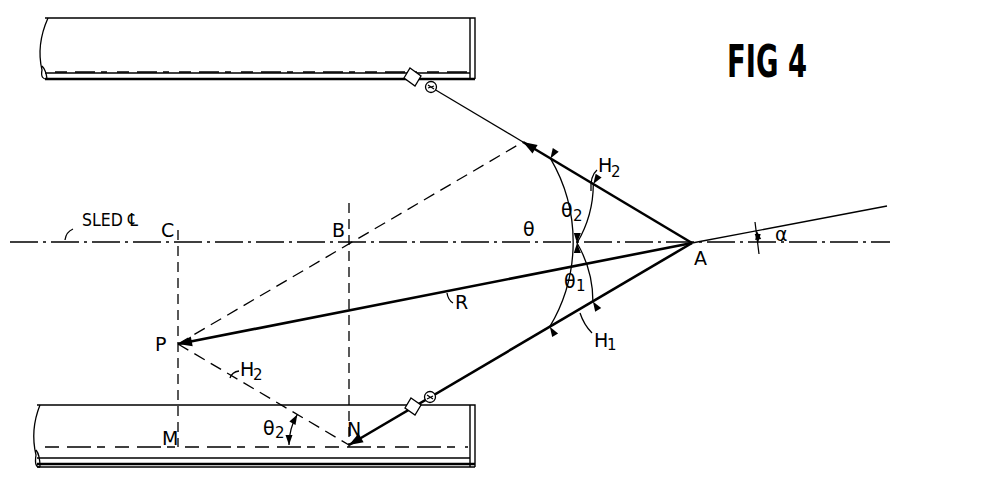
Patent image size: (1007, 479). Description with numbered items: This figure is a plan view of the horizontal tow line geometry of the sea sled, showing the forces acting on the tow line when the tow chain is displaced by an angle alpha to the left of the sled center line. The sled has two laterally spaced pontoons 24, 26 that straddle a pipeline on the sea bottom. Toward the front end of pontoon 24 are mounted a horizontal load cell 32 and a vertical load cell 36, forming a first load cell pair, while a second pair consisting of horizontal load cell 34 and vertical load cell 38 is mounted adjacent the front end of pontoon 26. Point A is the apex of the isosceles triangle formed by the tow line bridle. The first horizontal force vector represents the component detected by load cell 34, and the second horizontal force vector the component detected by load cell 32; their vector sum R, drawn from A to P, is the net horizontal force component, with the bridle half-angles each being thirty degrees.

The pontoon 24 is at (234, 82).
The pontoon 26 is at (424, 468).
The horizontal load cell 32 is at (408, 88).
The horizontal load cell 34 is at (410, 398).
The vertical load cell 36 is at (434, 94).
The vertical load cell 38 is at (443, 374).